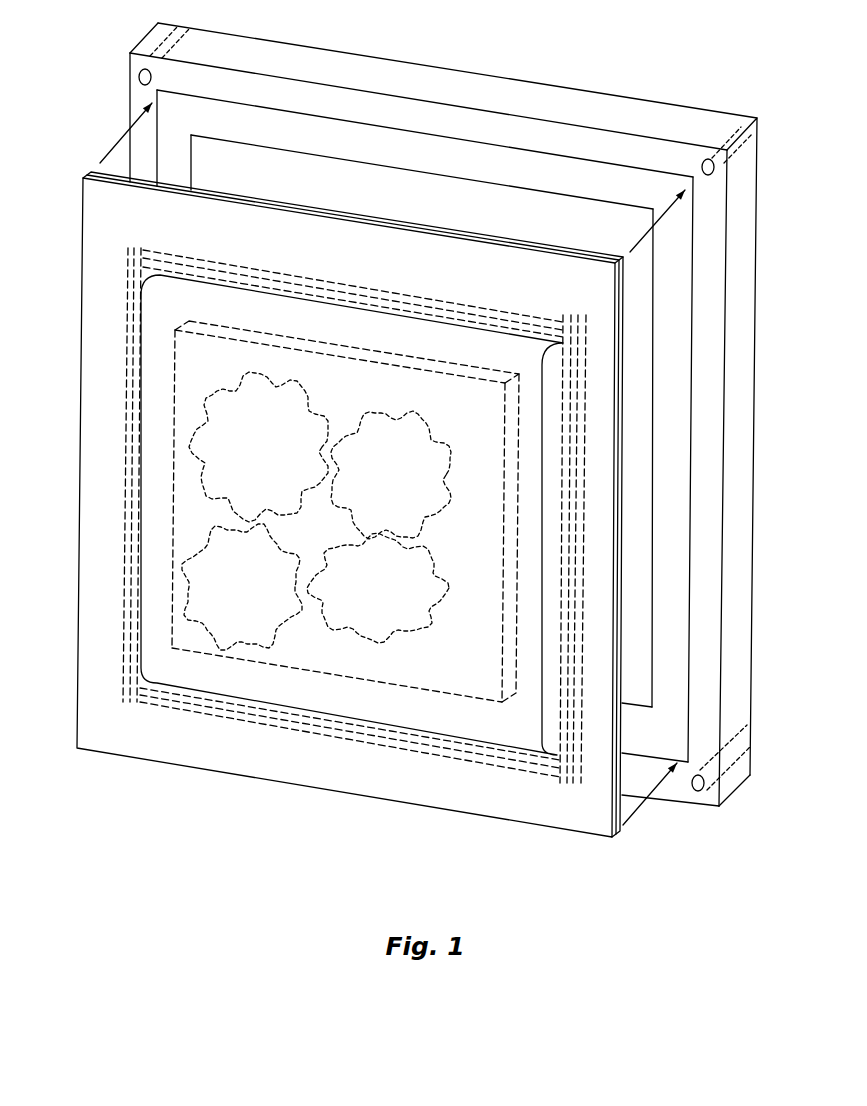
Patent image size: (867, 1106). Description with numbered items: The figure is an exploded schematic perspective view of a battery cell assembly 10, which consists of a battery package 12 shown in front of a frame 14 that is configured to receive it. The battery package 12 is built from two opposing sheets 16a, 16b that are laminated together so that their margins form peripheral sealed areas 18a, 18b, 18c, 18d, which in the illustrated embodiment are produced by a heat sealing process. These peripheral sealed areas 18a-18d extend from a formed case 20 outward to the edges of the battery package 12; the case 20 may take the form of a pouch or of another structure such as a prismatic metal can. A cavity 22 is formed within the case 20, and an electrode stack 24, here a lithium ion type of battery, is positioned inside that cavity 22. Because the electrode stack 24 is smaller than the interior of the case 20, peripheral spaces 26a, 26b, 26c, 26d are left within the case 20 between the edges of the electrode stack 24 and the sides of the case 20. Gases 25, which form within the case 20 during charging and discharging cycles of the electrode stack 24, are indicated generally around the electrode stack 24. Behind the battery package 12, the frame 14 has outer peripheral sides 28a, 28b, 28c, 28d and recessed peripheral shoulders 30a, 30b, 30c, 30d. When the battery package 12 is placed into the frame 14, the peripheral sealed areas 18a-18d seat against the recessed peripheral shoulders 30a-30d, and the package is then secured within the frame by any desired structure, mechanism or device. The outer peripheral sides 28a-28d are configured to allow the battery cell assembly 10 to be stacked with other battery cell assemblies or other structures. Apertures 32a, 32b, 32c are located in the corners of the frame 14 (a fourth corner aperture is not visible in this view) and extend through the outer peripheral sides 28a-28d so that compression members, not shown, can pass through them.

The battery cell assembly 10 is at (658, 20).
The battery package 12 is at (76, 665).
The frame 14 is at (745, 518).
The sheet 16a is at (93, 272).
The sheet 16b is at (290, 203).
The peripheral sealed area 18a is at (303, 733).
The peripheral sealed area 18b is at (563, 418).
The peripheral sealed area 18c is at (400, 290).
The peripheral sealed area 18d is at (125, 445).
The case 20 is at (397, 727).
The cavity 22 is at (250, 685).
The electrode stack 24 is at (435, 692).
The gases 25 is at (332, 487).
The peripheral space 26a is at (313, 683).
The peripheral space 26b is at (500, 548).
The peripheral space 26c is at (380, 342).
The peripheral space 26d is at (155, 377).
The outer peripheral side 28a is at (680, 807).
The outer peripheral side 28b is at (745, 350).
The outer peripheral side 28c is at (394, 50).
The outer peripheral side 28d is at (128, 97).
The recessed peripheral shoulder 30a is at (640, 743).
The recessed peripheral shoulder 30b is at (698, 480).
The recessed peripheral shoulder 30c is at (495, 176).
The recessed peripheral shoulder 30d is at (190, 181).
The aperture 32a is at (698, 792).
The aperture 32b is at (712, 174).
The aperture 32c is at (142, 70).